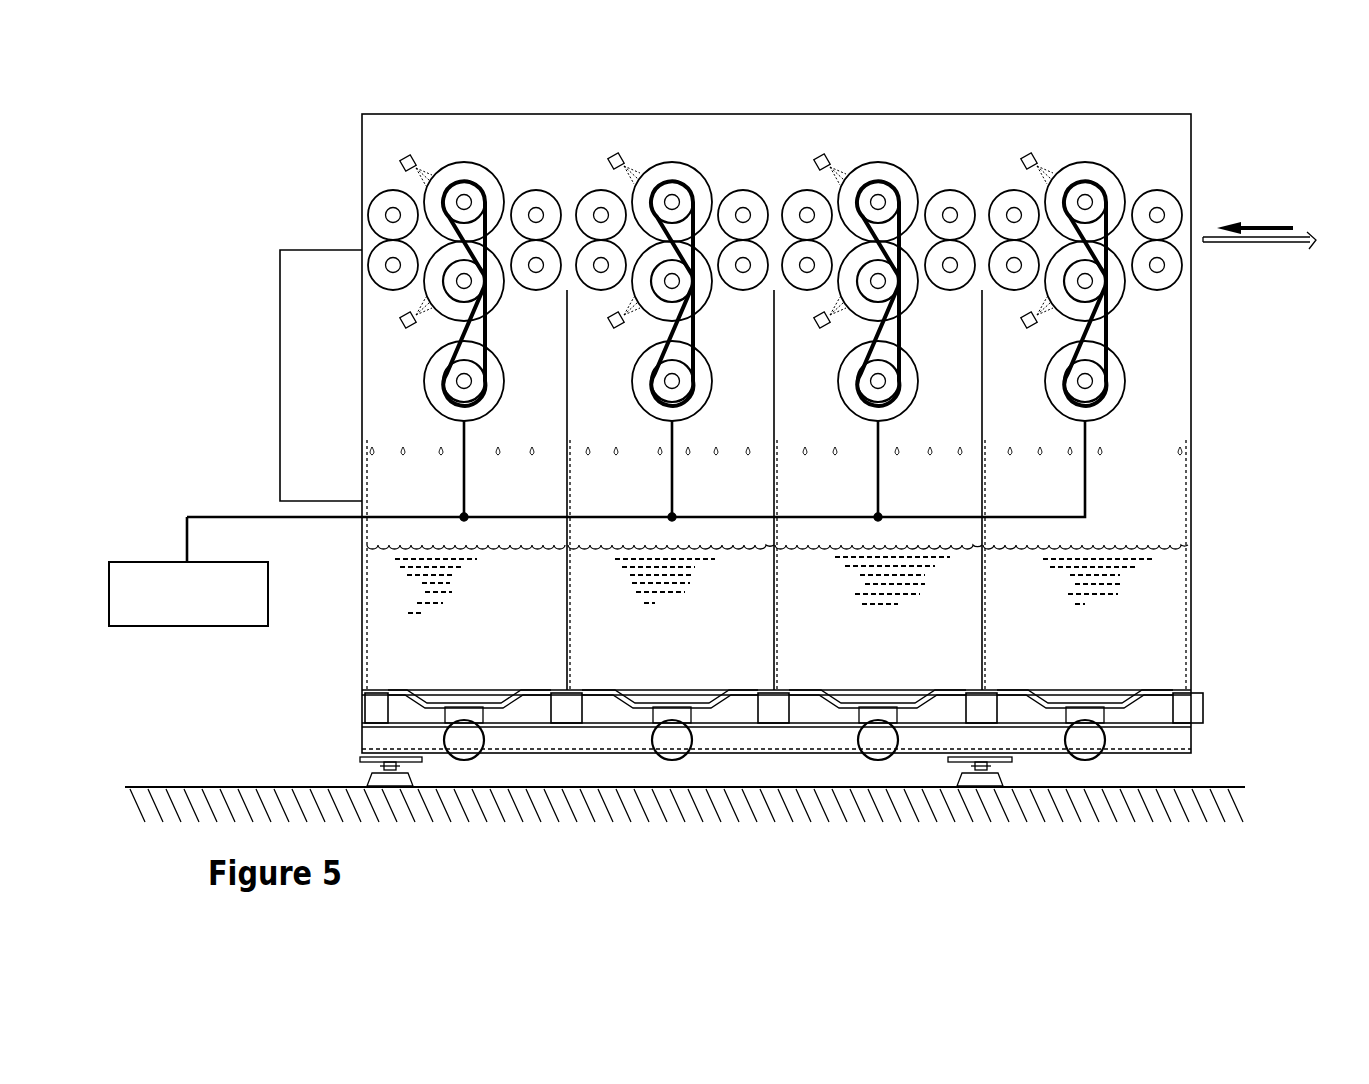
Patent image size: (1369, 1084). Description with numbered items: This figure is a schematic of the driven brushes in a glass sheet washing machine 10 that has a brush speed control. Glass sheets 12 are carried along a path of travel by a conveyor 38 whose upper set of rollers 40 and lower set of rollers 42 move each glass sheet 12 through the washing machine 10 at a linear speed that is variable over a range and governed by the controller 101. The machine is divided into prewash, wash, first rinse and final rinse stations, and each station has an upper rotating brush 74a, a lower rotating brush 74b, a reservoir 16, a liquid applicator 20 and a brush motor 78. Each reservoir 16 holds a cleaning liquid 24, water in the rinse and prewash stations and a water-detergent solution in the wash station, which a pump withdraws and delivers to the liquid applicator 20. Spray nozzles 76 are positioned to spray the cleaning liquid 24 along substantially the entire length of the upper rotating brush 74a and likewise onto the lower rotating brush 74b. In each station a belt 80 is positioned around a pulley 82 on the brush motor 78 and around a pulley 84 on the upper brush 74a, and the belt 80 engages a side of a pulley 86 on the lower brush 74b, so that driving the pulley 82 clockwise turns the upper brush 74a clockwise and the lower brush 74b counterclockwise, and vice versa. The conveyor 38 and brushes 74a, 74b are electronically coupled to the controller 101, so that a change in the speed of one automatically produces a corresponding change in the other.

The glass sheet washing machine 10 is at (803, 105).
The glass sheet 12 is at (1281, 255).
The reservoir 16 is at (1099, 677).
The liquid applicator 20 is at (380, 162).
The cleaning liquid 24 is at (808, 660).
The conveyor 38 is at (1191, 230).
The upper set of rollers 40 is at (1155, 201).
The lower set of rollers 42 is at (1172, 274).
The upper rotating brush 74a is at (1107, 176).
The lower rotating brush 74b is at (1113, 309).
The spray nozzles 76 is at (620, 156).
The brush motor 78 is at (1118, 388).
The belt 80 is at (1078, 331).
The pulley on the brush motor 82 is at (1066, 378).
The pulley on the upper brush 84 is at (1087, 190).
The pulley on the lower brush 86 is at (1111, 297).
The controller 101 is at (176, 630).